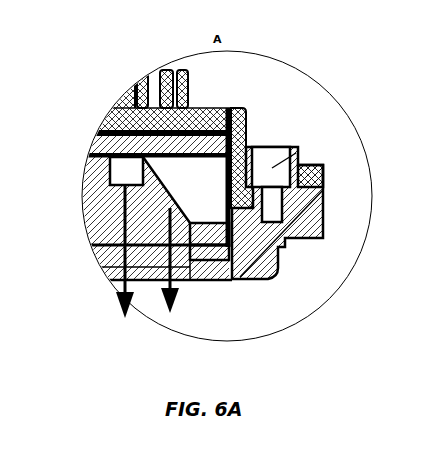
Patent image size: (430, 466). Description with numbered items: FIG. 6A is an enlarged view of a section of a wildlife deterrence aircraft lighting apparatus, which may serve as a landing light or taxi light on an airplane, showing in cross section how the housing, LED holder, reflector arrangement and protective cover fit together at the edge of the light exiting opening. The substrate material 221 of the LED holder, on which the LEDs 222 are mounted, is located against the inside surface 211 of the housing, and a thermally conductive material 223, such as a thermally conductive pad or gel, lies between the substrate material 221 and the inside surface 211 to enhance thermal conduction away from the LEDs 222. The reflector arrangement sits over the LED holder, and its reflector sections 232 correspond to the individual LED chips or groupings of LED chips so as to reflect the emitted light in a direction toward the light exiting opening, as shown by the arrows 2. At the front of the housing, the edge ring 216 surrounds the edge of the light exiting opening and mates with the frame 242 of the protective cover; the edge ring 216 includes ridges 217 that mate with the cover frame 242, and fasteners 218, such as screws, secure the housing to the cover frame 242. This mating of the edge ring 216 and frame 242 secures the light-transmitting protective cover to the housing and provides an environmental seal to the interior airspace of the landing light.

The arrows 2 is at (182, 285).
The inside surface 211 is at (172, 138).
The edge ring 216 is at (316, 165).
The ridges 217 is at (247, 222).
The fasteners 218 is at (270, 147).
The substrate material 221 is at (234, 108).
The LEDs 222 is at (90, 183).
The thermally conductive material 223 is at (198, 108).
The reflector sections 232 is at (178, 192).
The frame 242 is at (270, 266).